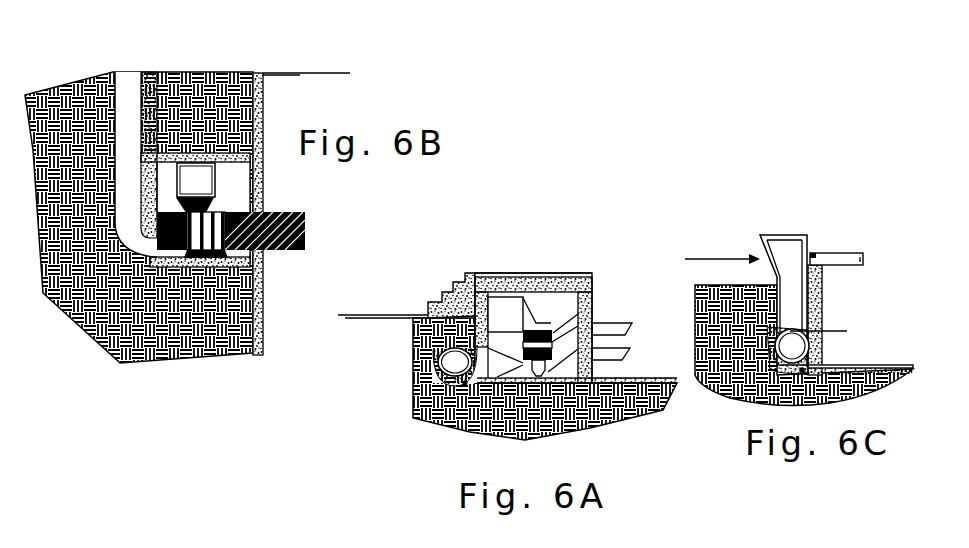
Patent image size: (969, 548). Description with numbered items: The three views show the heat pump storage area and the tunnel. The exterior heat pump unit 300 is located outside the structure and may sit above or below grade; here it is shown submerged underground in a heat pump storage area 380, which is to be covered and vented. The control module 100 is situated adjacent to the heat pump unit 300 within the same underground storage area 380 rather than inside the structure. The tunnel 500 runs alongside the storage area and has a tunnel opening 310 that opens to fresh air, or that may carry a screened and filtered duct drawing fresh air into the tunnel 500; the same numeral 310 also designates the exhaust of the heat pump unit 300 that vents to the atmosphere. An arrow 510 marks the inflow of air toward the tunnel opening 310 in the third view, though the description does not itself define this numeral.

In FIG. 6A, the control module 100 is at (578, 314).
In FIG. 6B, the exterior heat pump unit 300 is at (196, 188).
In FIG. 6A, the exterior heat pump unit 300 is at (505, 314).
In FIG. 6A, the tunnel opening 310 is at (512, 276).
In FIG. 6A, the heat pump storage area 380 is at (477, 427).
In FIG. 6B, the tunnel 500 is at (130, 71).
In FIG. 6A, the tunnel 500 is at (455, 362).
In FIG. 6C, the tunnel 500 is at (792, 346).
In FIG. 6C, the inflow direction 510 is at (716, 250).